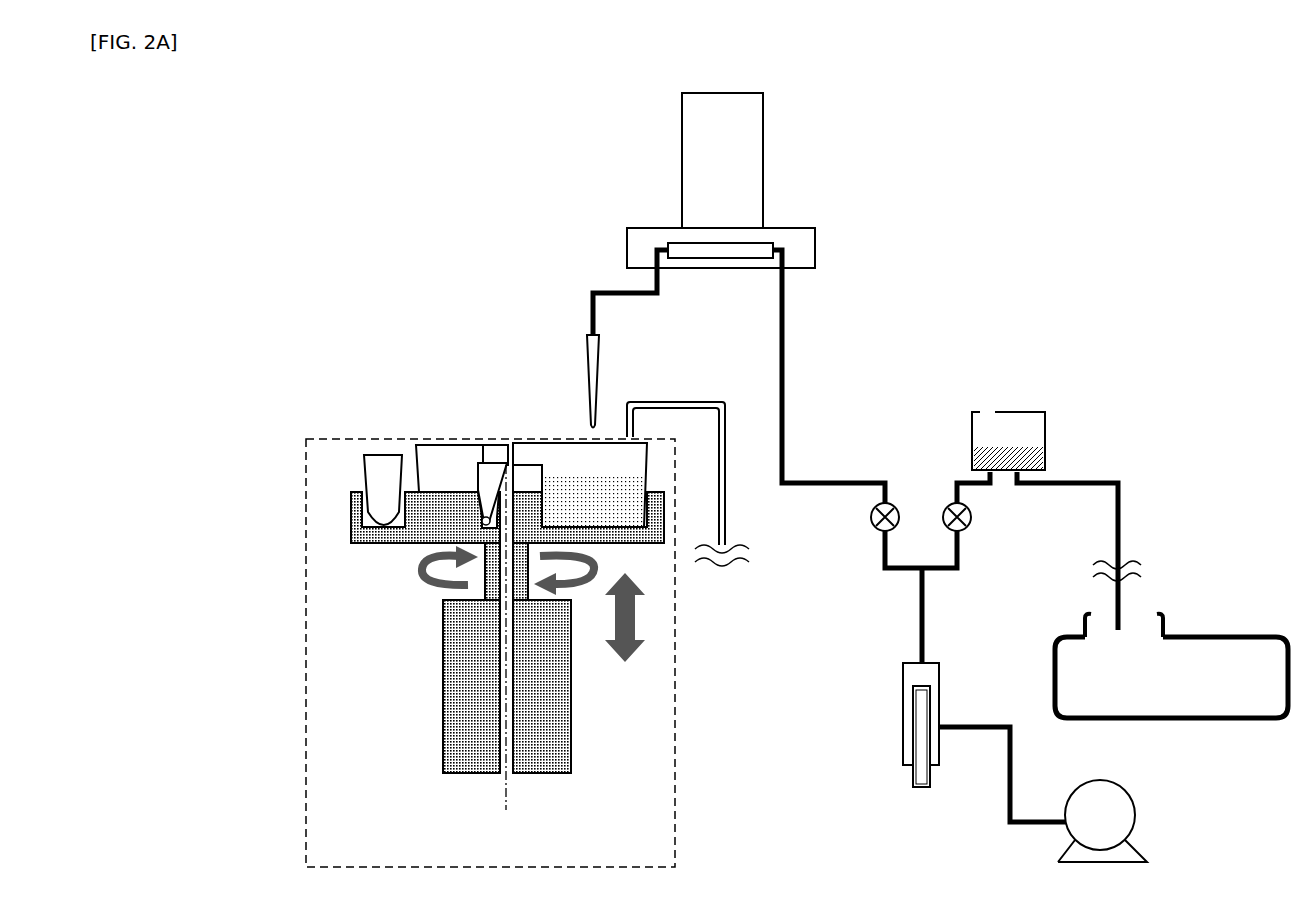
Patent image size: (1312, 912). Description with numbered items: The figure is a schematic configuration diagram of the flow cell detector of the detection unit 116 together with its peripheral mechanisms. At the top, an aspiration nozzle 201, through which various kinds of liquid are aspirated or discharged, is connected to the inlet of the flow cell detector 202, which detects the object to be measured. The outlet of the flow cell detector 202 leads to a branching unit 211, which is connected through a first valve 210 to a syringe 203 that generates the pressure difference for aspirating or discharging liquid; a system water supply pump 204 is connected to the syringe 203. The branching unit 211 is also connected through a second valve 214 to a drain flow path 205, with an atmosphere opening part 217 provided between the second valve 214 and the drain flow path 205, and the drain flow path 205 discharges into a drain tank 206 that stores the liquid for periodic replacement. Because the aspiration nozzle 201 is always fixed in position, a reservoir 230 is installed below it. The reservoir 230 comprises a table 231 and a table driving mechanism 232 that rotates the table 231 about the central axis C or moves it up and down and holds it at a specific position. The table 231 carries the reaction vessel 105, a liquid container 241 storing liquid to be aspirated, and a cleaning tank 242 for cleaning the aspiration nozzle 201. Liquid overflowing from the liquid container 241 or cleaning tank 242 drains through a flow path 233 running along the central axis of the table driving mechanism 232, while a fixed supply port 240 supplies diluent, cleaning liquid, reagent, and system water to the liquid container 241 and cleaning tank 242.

The detection unit 116 is at (392, 104).
The flow cell detector 202 is at (743, 252).
The aspiration nozzle 201 is at (592, 392).
The supply port 240 is at (667, 400).
The cleaning tank 242 is at (465, 460).
The liquid container 241 is at (575, 462).
The reaction vessel 105 is at (364, 470).
The table 231 is at (412, 540).
The flow path 233 is at (502, 642).
The table driving mechanism 232 is at (443, 707).
The reservoir 230 is at (653, 848).
The atmosphere opening part 217 is at (1042, 430).
The first valve 210 is at (870, 513).
The second valve 214 is at (970, 518).
The branching unit 211 is at (918, 572).
The drain flow path 205 is at (1122, 520).
The drain tank 206 is at (1203, 634).
The syringe 203 is at (903, 763).
The system water supply pump 204 is at (1136, 811).